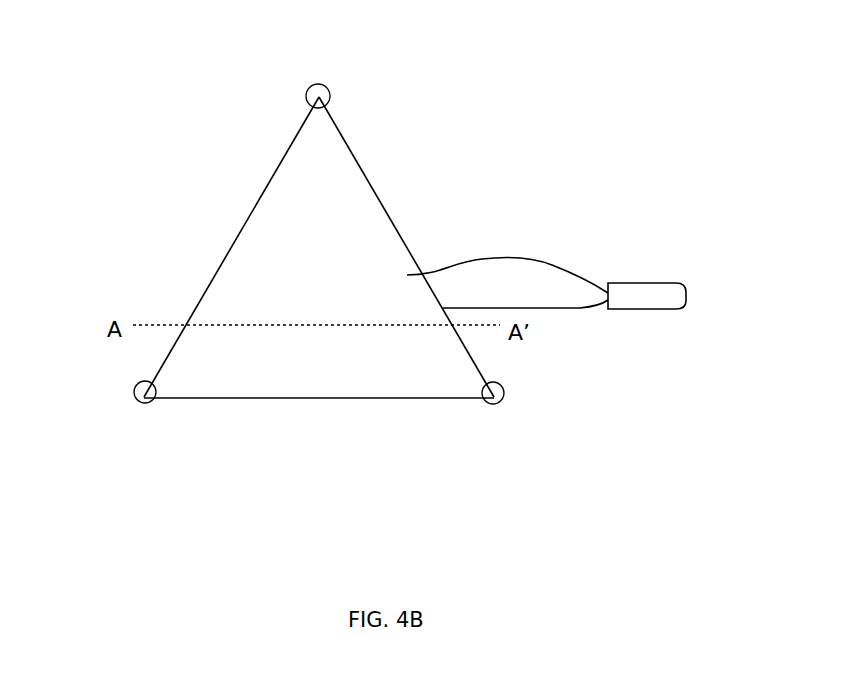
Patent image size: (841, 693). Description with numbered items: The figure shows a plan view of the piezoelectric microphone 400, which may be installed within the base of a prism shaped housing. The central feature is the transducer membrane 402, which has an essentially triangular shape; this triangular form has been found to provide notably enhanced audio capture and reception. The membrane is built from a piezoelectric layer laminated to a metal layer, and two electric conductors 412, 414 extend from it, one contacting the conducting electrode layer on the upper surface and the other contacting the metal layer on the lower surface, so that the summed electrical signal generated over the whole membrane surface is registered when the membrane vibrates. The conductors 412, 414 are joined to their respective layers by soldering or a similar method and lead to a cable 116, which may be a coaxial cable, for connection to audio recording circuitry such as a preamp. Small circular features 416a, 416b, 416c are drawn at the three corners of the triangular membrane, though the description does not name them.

The piezoelectric microphone 400 is at (146, 123).
The transducer membrane 402 is at (223, 234).
The electric conductor 412 is at (560, 268).
The electric conductor 414 is at (572, 308).
The cable 116 is at (656, 283).
The pivot joint (apex) 416a is at (331, 90).
The pivot joint (lower left) 416b is at (134, 397).
The pivot joint (lower right) 416c is at (501, 403).